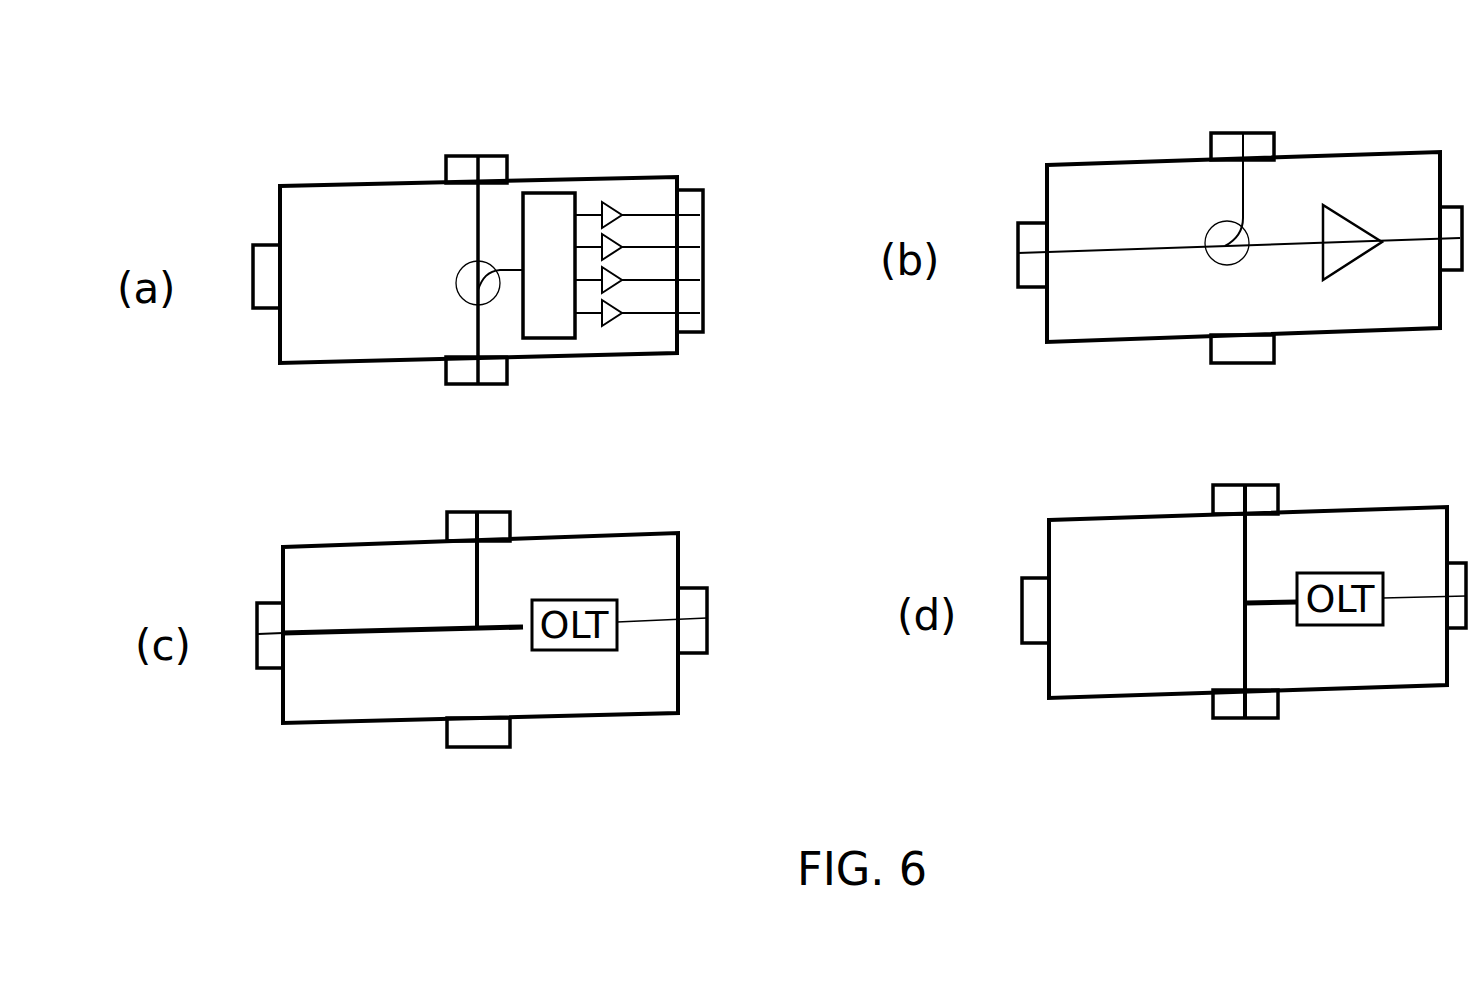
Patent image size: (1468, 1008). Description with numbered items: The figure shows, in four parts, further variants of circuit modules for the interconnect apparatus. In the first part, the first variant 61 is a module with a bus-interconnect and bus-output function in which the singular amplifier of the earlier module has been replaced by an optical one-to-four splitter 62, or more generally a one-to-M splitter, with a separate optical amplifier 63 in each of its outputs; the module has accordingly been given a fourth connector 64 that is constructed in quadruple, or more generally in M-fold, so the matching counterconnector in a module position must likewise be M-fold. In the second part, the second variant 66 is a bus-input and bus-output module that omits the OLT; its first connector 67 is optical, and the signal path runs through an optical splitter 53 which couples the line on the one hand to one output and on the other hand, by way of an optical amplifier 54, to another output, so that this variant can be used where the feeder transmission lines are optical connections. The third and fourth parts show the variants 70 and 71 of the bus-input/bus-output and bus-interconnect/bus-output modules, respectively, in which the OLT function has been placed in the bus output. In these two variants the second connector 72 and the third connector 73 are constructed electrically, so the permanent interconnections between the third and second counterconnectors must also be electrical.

The optical splitter 53 is at (1242, 260).
The optical amplifier 54 is at (1355, 262).
The first variant 61 is at (350, 367).
The optical (1:4)-splitter 62 is at (548, 200).
The optical amplifier 63 is at (613, 208).
The fourth connector 64 is at (692, 320).
The second variant 66 is at (1385, 152).
The first connector 67 is at (1030, 272).
The variant 70 is at (633, 532).
The variant 71 is at (1375, 507).
The second connector 72 is at (497, 522).
The third connector 73 is at (467, 730).